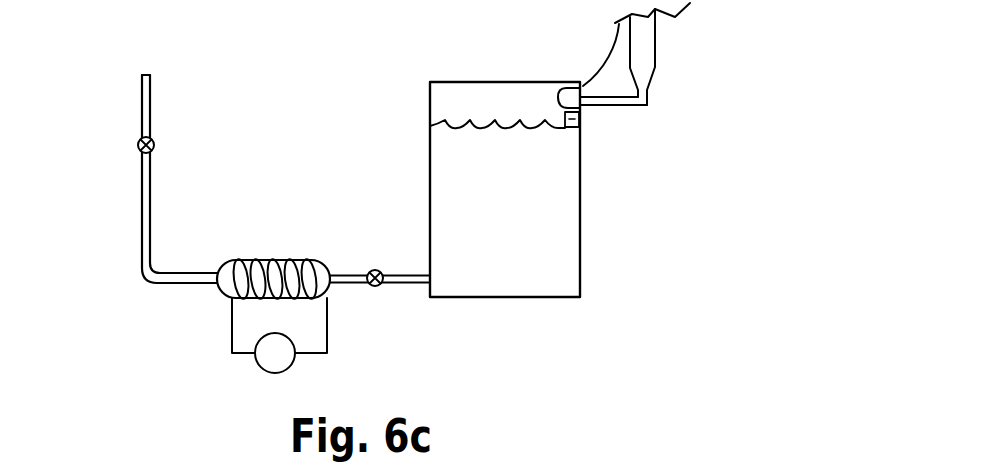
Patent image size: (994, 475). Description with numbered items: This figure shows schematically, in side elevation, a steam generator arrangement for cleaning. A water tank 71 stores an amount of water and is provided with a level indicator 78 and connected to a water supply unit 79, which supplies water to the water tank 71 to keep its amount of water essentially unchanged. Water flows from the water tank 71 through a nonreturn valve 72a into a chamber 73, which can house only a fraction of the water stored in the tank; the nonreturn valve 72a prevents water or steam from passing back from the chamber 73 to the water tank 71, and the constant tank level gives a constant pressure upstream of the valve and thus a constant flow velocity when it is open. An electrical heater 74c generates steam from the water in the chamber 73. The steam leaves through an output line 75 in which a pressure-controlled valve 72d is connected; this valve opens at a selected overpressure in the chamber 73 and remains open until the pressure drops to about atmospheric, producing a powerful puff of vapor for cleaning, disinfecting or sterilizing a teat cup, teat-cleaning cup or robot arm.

The water tank 71 is at (582, 215).
The nonreturn valve 72a is at (373, 268).
The pressure-controlled valve 72d is at (138, 144).
The chamber 73 is at (216, 292).
The electrical heater 74c is at (329, 341).
The output line 75 is at (141, 218).
The level indicator 78 is at (580, 118).
The water supply unit 79 is at (650, 100).